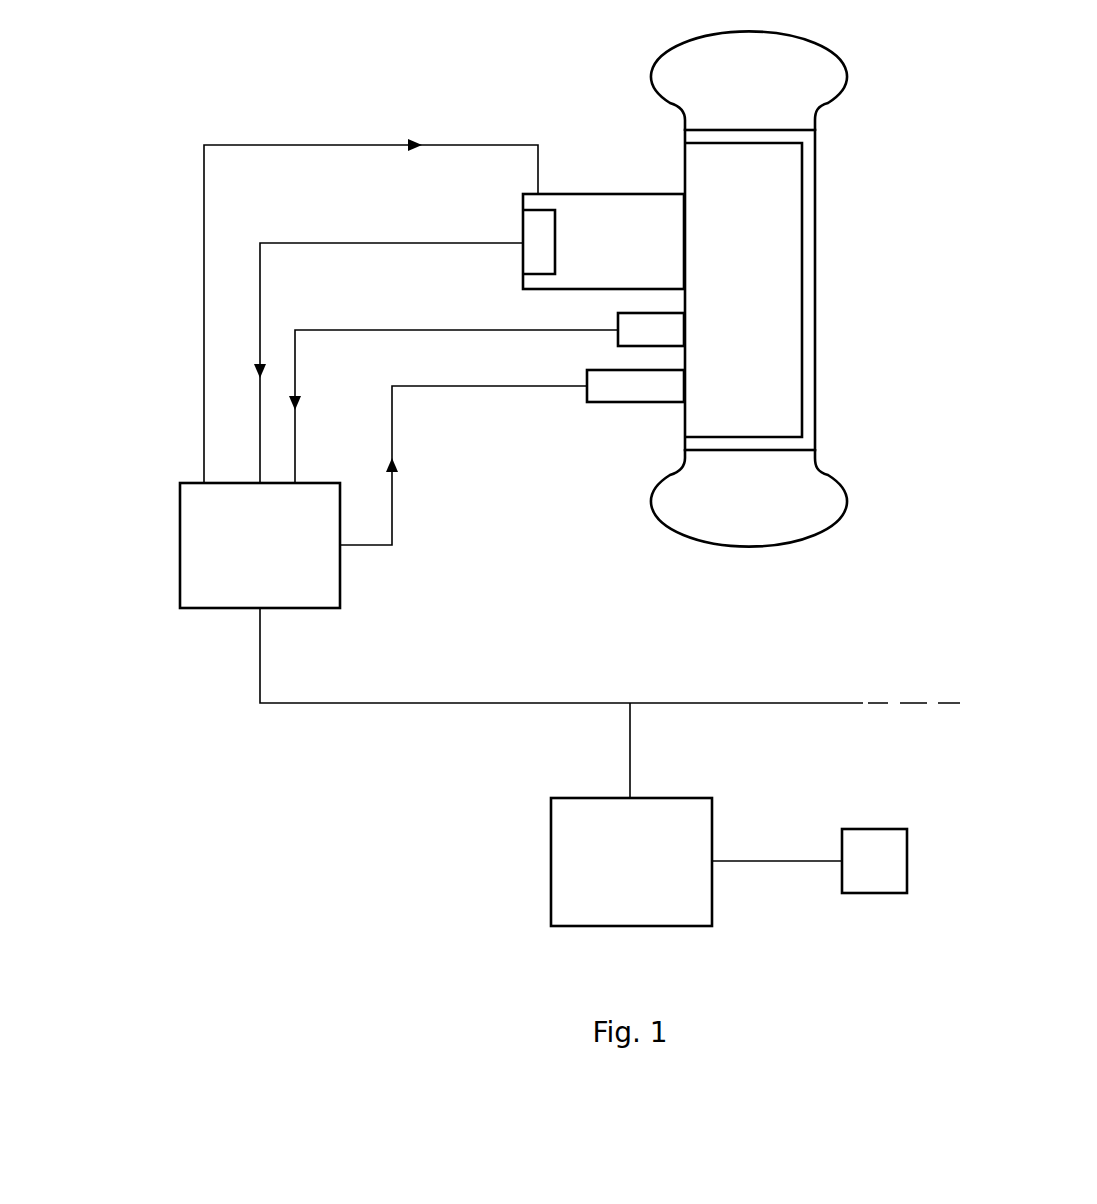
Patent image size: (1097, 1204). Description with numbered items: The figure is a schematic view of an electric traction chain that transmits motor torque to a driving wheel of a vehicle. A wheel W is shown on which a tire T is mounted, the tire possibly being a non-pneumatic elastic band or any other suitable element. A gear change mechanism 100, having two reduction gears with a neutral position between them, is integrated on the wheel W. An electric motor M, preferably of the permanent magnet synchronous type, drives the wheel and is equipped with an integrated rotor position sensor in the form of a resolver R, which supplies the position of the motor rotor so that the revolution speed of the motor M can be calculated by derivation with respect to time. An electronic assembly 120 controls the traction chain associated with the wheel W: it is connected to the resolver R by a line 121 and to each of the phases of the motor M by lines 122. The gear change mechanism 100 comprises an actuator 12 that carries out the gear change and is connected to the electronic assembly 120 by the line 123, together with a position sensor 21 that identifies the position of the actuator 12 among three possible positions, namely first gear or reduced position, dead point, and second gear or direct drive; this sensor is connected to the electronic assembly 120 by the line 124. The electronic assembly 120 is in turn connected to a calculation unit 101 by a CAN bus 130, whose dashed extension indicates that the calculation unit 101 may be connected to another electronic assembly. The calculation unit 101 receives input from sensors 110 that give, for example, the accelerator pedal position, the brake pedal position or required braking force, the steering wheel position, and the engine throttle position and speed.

The tire T is at (803, 35).
The wheel W is at (802, 207).
The gear change mechanism 100 is at (752, 296).
The electric motor M is at (648, 227).
The resolver R is at (540, 258).
The position sensor 21 is at (637, 323).
The actuator 12 is at (633, 403).
The lines 122 is at (290, 145).
The line 121 is at (307, 243).
The line 124 is at (300, 378).
The line 123 is at (538, 387).
The electronic assembly 120 is at (180, 547).
The CAN bus 130 is at (740, 703).
The calculation unit 101 is at (550, 863).
The sensors 110 is at (873, 893).